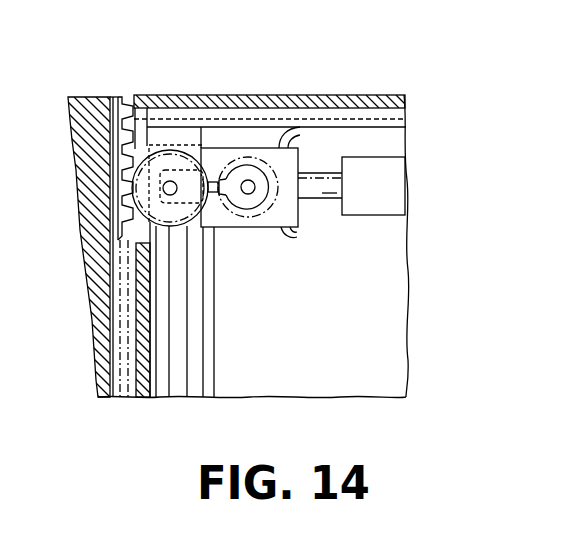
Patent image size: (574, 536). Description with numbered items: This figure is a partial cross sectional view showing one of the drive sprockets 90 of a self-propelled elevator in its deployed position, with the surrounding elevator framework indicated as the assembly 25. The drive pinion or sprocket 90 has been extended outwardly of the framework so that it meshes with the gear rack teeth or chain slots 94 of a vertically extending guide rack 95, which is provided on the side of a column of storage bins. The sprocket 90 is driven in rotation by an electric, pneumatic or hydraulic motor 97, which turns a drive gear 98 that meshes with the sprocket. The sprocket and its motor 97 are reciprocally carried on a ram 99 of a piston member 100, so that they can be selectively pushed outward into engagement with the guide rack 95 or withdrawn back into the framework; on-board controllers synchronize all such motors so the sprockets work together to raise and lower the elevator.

The seat frame assembly 25 is at (274, 84).
The drive sprocket 90 is at (188, 155).
The gear rack teeth or chain slots 94 is at (135, 150).
The guide rack 95 is at (110, 232).
The motor 97 is at (297, 147).
The drive gear 98 is at (258, 208).
The ram 99 is at (323, 185).
The piston member 100 is at (399, 176).